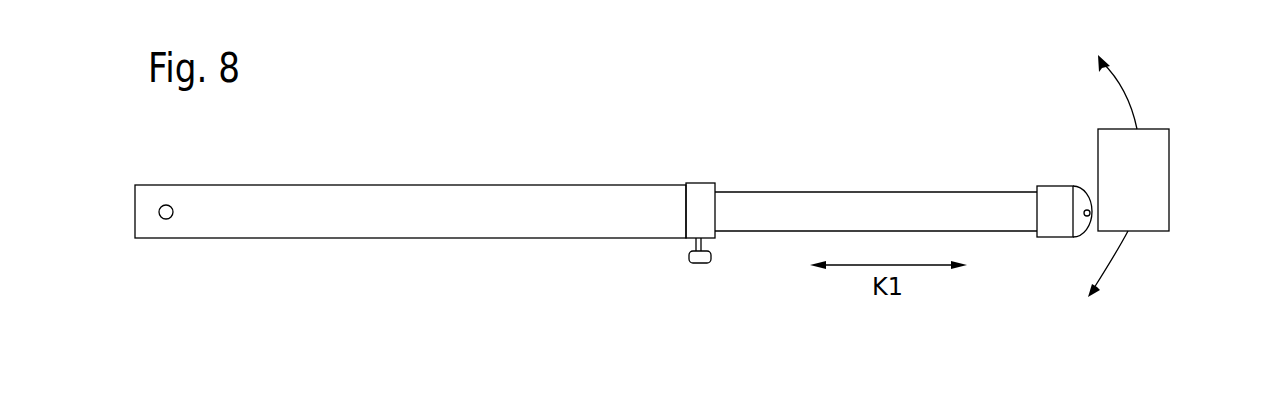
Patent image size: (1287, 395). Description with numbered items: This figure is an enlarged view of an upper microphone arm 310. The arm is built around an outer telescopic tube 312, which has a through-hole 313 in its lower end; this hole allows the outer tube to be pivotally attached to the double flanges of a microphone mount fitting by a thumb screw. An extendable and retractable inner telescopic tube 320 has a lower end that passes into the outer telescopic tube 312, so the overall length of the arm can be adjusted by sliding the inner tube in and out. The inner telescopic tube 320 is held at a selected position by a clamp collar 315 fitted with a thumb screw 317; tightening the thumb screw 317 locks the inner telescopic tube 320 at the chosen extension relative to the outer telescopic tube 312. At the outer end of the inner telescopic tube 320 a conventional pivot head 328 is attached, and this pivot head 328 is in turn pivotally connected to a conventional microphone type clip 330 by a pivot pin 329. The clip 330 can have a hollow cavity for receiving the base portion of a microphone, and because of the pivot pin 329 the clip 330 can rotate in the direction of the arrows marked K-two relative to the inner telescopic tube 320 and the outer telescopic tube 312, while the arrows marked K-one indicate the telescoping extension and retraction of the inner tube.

The upper microphone arm 310 is at (706, 95).
The outer telescopic tube 312 is at (410, 188).
The through-hole 313 is at (132, 172).
The clamp collar 315 is at (738, 178).
The thumb screw 317 is at (742, 272).
The inner telescopic tube 320 is at (876, 188).
The pivot head 328 is at (1045, 190).
The pivot pin 329 is at (1034, 277).
The microphone type clip 330 is at (1159, 176).